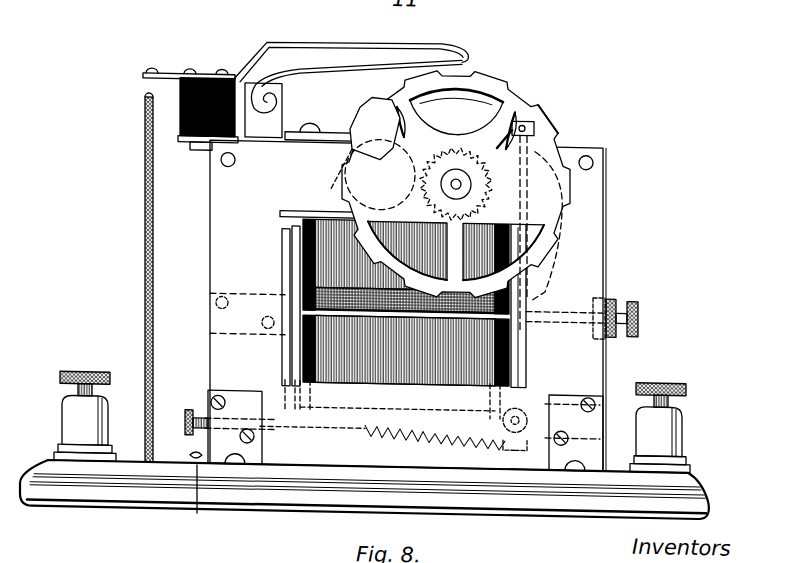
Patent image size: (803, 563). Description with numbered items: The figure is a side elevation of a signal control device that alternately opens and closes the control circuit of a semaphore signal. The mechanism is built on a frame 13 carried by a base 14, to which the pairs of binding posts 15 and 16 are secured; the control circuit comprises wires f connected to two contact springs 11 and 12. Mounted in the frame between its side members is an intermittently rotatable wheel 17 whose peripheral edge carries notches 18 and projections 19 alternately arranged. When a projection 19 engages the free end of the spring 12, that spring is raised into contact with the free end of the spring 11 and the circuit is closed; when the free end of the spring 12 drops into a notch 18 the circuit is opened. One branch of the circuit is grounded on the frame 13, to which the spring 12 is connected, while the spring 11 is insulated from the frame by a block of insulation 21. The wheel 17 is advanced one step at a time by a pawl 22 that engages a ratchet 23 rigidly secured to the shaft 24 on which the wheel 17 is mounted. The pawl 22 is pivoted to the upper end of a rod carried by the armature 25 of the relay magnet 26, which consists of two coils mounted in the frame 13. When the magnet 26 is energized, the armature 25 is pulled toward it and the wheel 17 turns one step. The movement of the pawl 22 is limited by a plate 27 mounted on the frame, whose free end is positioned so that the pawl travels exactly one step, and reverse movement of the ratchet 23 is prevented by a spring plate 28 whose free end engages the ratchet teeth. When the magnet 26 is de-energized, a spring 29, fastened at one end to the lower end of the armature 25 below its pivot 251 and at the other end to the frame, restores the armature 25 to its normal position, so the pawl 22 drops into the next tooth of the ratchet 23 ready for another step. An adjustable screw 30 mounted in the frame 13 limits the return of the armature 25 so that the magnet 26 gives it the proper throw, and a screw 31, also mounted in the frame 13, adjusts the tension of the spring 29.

The contact spring 11 is at (338, 40).
The contact spring 12 is at (336, 66).
The frame 13 is at (583, 221).
The base 14 is at (338, 500).
The binding post 15 is at (683, 416).
The binding post 16 is at (68, 422).
The intermittently rotatable wheel 17 is at (503, 86).
The notch 18 is at (550, 124).
The projection 19 is at (544, 95).
The block of insulation 21 is at (182, 113).
The pawl 22 is at (488, 122).
The ratchet 23 is at (424, 154).
The shaft 24 is at (523, 158).
The armature 25 is at (525, 286).
The relay magnet 26 is at (298, 284).
The plate 27 is at (395, 120).
The spring plate 28 is at (345, 178).
The spring 29 is at (398, 422).
The adjustable screw 30 is at (620, 327).
The screw 31 is at (200, 407).
The pivot 251 is at (503, 414).
The wire f is at (145, 213).